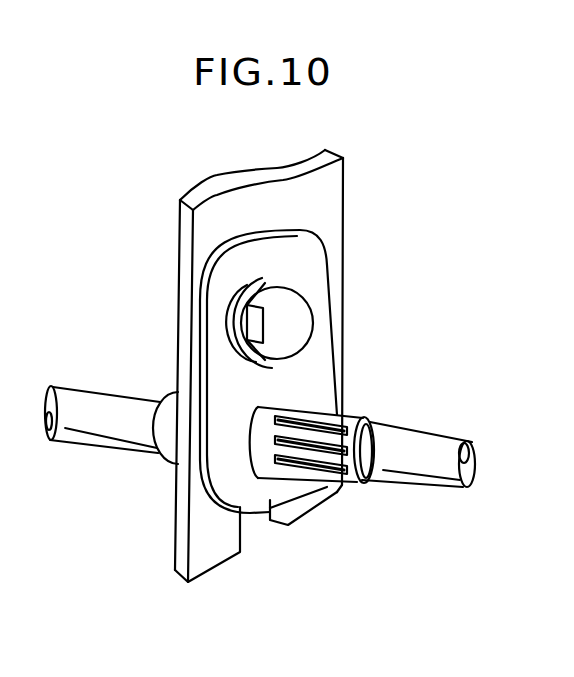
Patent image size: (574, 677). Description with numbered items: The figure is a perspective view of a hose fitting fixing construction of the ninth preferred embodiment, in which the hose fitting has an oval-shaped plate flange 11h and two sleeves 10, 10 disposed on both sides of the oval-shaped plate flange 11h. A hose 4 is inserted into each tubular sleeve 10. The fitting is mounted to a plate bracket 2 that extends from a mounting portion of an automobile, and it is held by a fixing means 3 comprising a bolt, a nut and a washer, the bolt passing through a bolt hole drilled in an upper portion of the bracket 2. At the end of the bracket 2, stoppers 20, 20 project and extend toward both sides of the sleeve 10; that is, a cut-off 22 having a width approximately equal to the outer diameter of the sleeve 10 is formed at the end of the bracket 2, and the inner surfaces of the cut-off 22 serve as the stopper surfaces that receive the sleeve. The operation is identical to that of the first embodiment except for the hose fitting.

The plate bracket 2 is at (317, 210).
The fixing means 3 is at (298, 322).
The hose 4 is at (100, 408).
The sleeve 10 is at (170, 447).
The oval-shaped plate flange 11h is at (320, 388).
The stopper 20 is at (203, 548).
The cut-off 22 is at (267, 530).